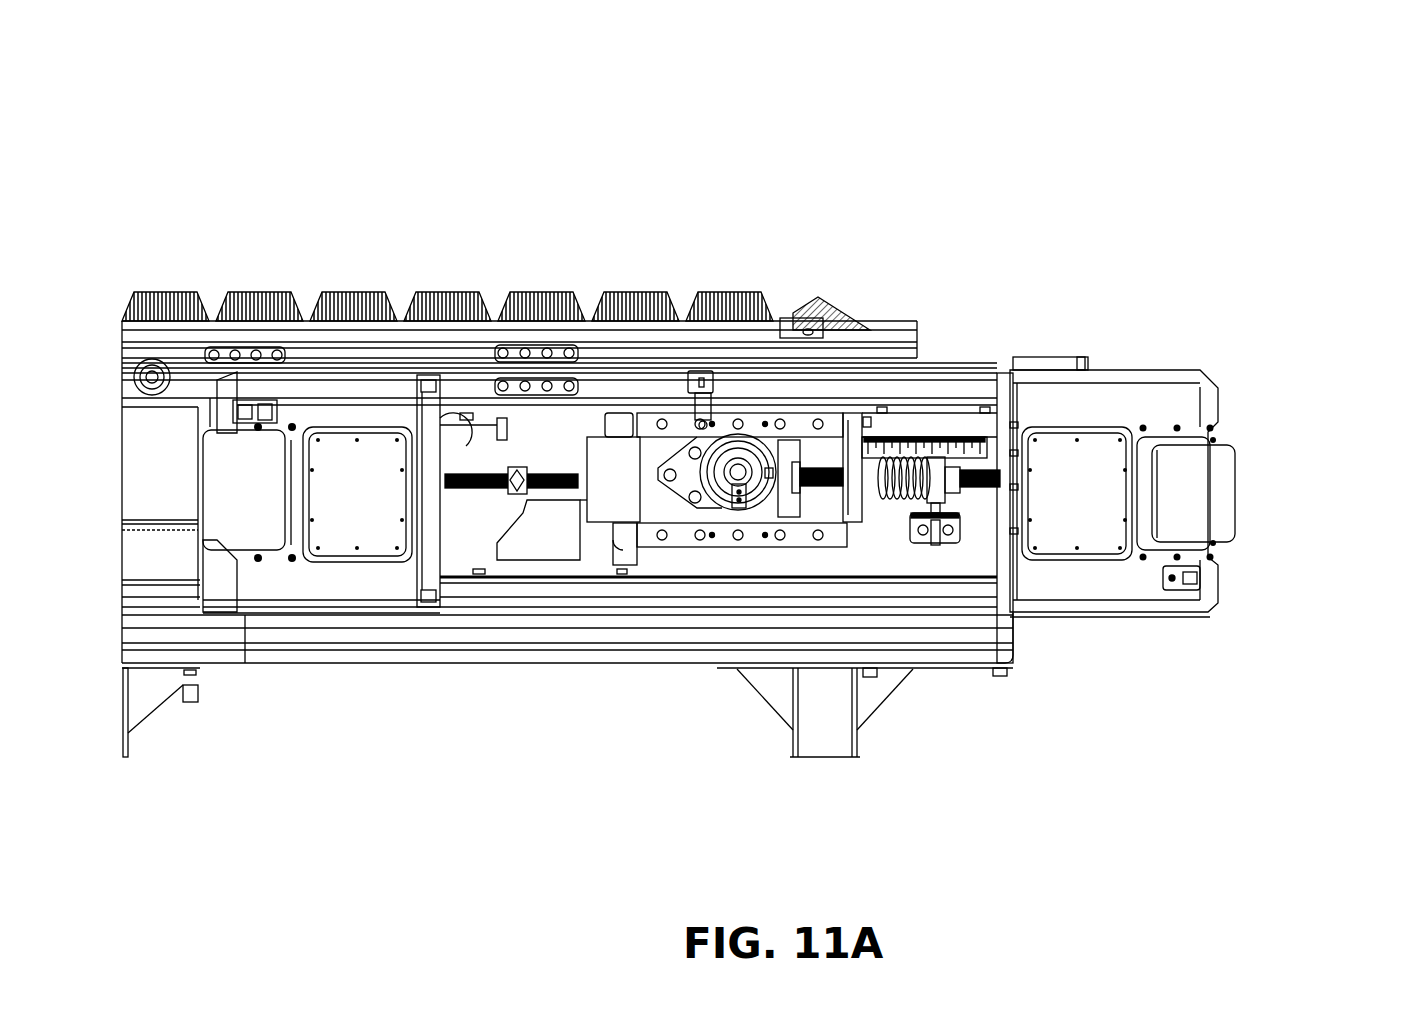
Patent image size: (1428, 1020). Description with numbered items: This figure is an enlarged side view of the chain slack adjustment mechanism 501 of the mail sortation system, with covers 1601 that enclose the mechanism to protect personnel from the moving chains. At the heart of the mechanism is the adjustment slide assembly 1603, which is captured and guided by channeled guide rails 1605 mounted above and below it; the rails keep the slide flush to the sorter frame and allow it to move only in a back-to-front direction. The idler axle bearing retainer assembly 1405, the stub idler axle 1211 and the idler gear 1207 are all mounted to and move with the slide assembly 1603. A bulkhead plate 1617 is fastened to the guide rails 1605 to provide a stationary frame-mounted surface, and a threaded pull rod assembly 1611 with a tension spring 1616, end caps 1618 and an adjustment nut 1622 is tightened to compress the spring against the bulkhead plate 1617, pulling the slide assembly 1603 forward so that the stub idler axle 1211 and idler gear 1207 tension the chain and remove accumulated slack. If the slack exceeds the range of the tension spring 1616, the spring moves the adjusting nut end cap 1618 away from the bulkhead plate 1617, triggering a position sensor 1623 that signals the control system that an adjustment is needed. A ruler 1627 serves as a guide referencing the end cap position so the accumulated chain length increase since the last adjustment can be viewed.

The chain slack adjustment mechanism 501 is at (1249, 108).
The covers 1601 is at (1195, 370).
The adjustment slide assembly 1603 is at (610, 493).
The idler axle bearing retainer assembly 1405 is at (703, 420).
The idler gear 1207 is at (673, 428).
The channeled guide rails 1605 is at (677, 533).
The stub idler axle 1211 is at (737, 487).
The threaded pull rod assembly 1611 is at (808, 487).
The bulkhead plate 1617 is at (852, 483).
The tension spring 1616 is at (917, 440).
The end caps 1618 is at (872, 463).
The ruler 1627 is at (932, 440).
The adjustment nut 1622 is at (953, 480).
The position sensor 1623 is at (932, 543).